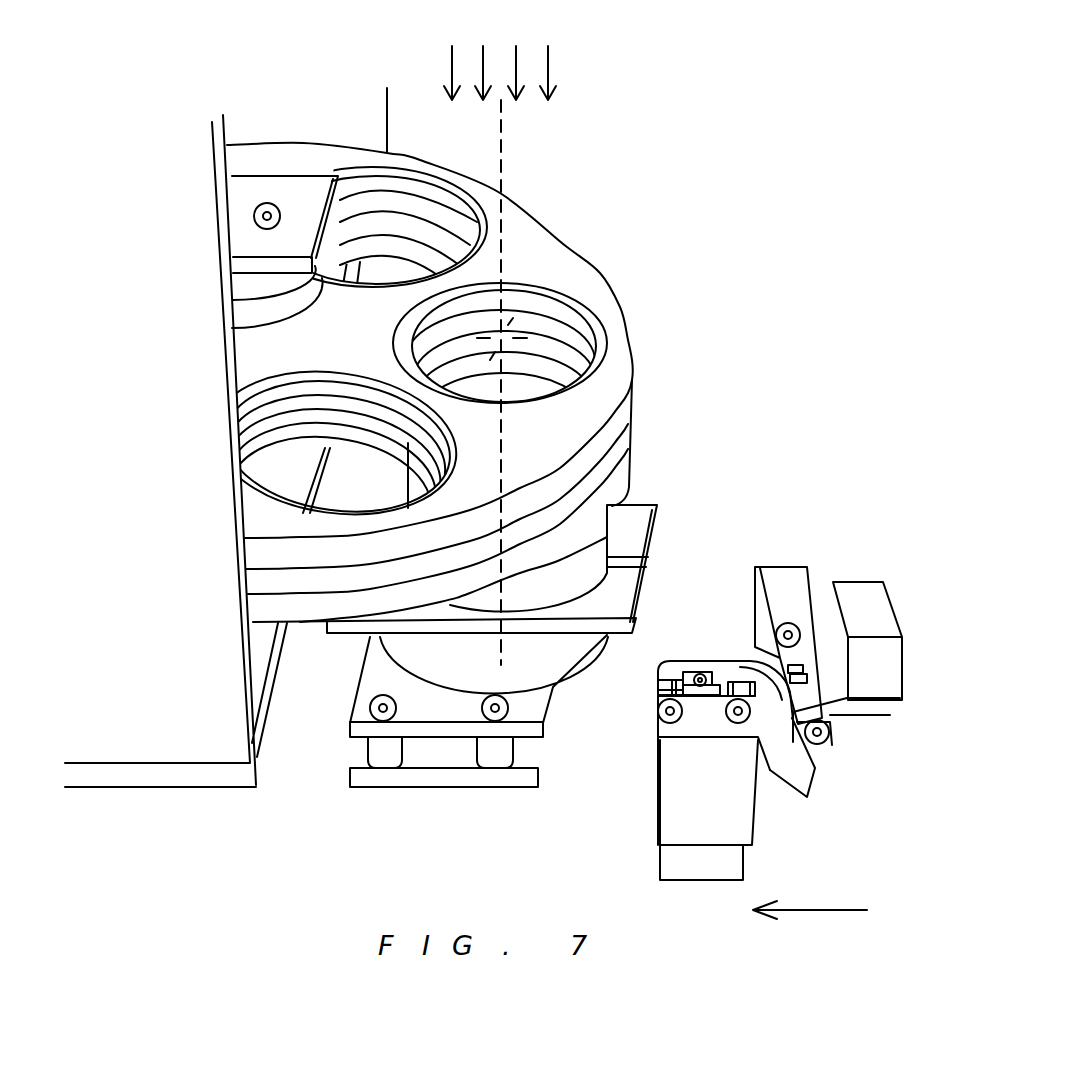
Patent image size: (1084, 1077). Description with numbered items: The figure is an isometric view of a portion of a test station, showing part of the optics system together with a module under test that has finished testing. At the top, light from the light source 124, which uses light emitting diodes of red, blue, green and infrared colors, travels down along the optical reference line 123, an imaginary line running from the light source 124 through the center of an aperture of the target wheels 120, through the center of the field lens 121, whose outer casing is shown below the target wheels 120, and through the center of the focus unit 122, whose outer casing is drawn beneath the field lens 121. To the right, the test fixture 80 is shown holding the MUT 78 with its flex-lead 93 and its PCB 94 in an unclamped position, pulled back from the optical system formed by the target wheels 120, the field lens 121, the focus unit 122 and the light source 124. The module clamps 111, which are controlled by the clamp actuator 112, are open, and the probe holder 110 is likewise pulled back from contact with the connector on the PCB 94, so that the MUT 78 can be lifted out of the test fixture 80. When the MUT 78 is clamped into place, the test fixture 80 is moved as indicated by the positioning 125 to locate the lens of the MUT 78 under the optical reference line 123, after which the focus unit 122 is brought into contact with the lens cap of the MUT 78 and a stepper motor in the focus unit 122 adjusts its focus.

The MUT 78 is at (690, 672).
The test fixture 80 is at (660, 674).
The flex-lead 93 is at (738, 660).
The PCB 94 is at (822, 716).
The probe holder 110 is at (877, 715).
The module clamps 111 is at (660, 700).
The clamp actuator 112 is at (658, 818).
The target wheels 120 is at (603, 280).
The field lens 121 is at (608, 537).
The focus unit 122 is at (433, 677).
The optical reference line 123 is at (502, 158).
The light source 124 is at (548, 68).
The positioning of the test fixture 125 is at (817, 910).